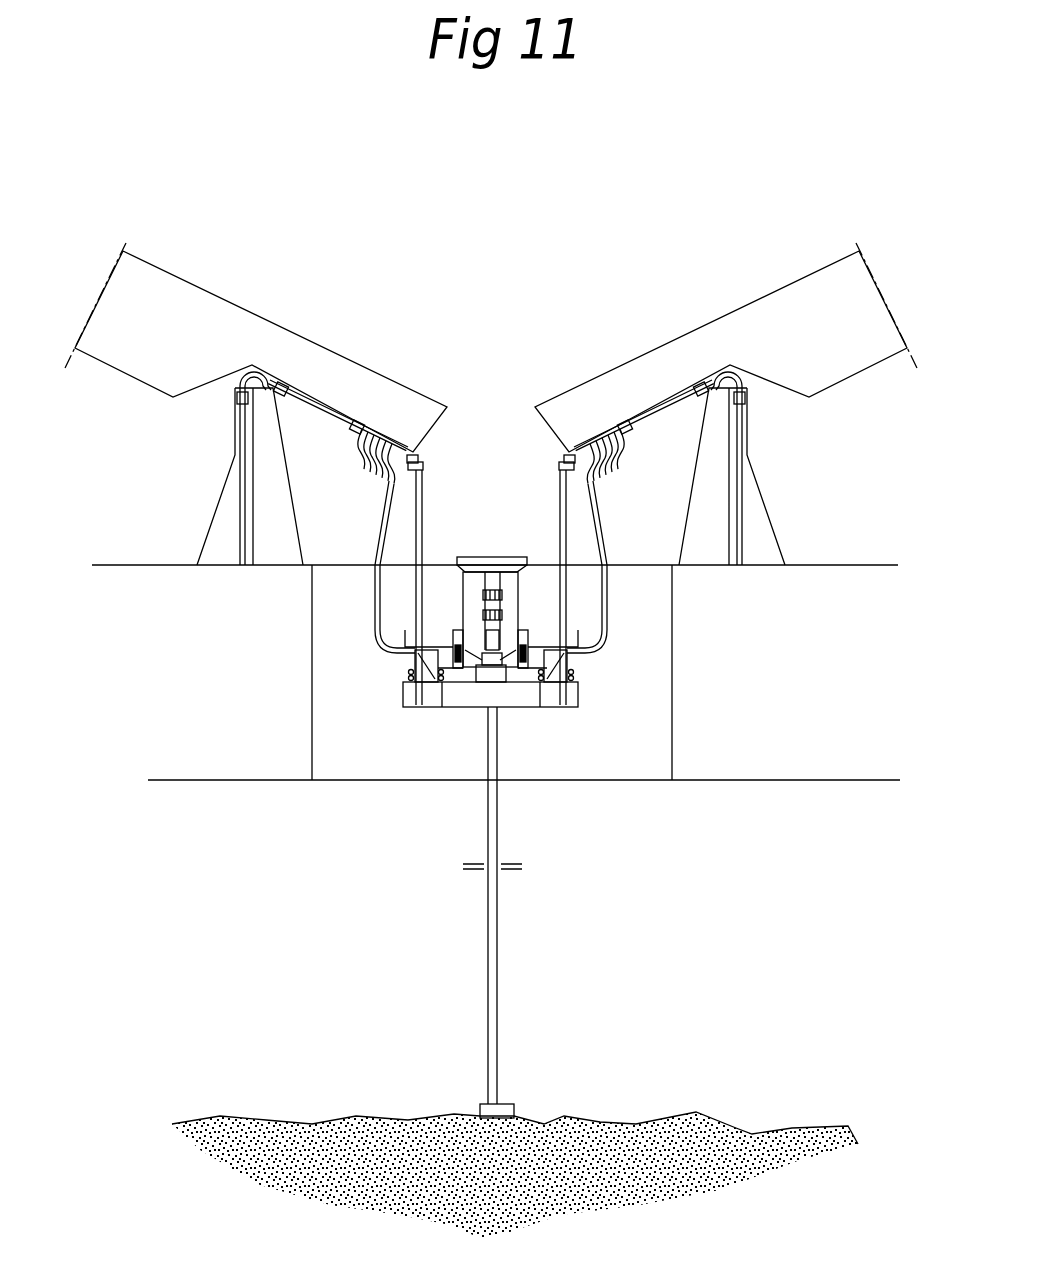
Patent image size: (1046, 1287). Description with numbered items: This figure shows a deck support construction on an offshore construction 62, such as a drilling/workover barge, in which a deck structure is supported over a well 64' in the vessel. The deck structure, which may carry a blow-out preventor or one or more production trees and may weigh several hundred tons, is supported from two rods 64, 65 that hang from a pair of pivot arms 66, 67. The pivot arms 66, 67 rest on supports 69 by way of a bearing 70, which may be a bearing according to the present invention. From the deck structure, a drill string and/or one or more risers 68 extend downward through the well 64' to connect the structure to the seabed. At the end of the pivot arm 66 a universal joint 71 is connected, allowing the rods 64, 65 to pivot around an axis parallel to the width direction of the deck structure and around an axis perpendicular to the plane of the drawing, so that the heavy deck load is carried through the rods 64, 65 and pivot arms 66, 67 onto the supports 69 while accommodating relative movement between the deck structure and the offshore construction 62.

The offshore construction 62 is at (852, 577).
The rod 64 is at (544, 587).
The well 64' is at (524, 672).
The rod 65 is at (423, 490).
The pivot arm 66 is at (767, 307).
The pivot arm 67 is at (226, 323).
The riser 68 is at (498, 936).
The support 69 is at (760, 516).
The bearing 70 is at (750, 391).
The universal joint 71 is at (562, 467).